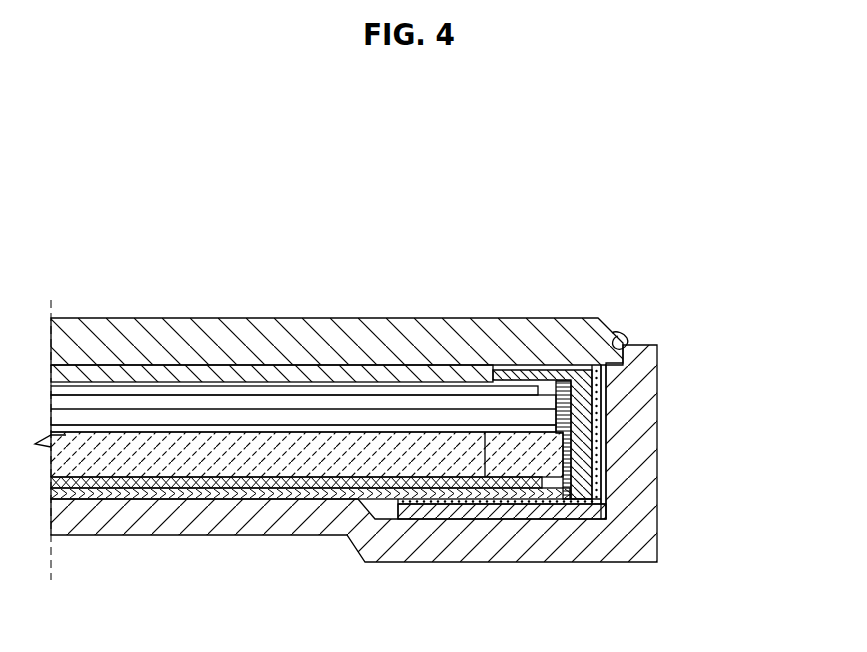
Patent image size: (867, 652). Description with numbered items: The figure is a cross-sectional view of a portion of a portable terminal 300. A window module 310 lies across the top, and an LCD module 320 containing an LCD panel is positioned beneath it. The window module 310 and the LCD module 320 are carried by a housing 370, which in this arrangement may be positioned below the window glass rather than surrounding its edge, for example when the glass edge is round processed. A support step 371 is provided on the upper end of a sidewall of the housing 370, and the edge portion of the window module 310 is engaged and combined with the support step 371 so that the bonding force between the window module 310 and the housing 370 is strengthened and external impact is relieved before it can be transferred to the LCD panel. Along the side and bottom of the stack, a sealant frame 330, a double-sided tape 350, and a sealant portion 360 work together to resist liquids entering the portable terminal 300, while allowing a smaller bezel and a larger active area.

The portable terminal 300 is at (422, 152).
The window module 310 is at (617, 318).
The LCD module 320 is at (336, 382).
The sealant frame 330 is at (599, 432).
The double-sided tape 350 is at (607, 478).
The sealant portion 360 is at (502, 512).
The housing 370 is at (663, 398).
The support step 371 is at (620, 335).